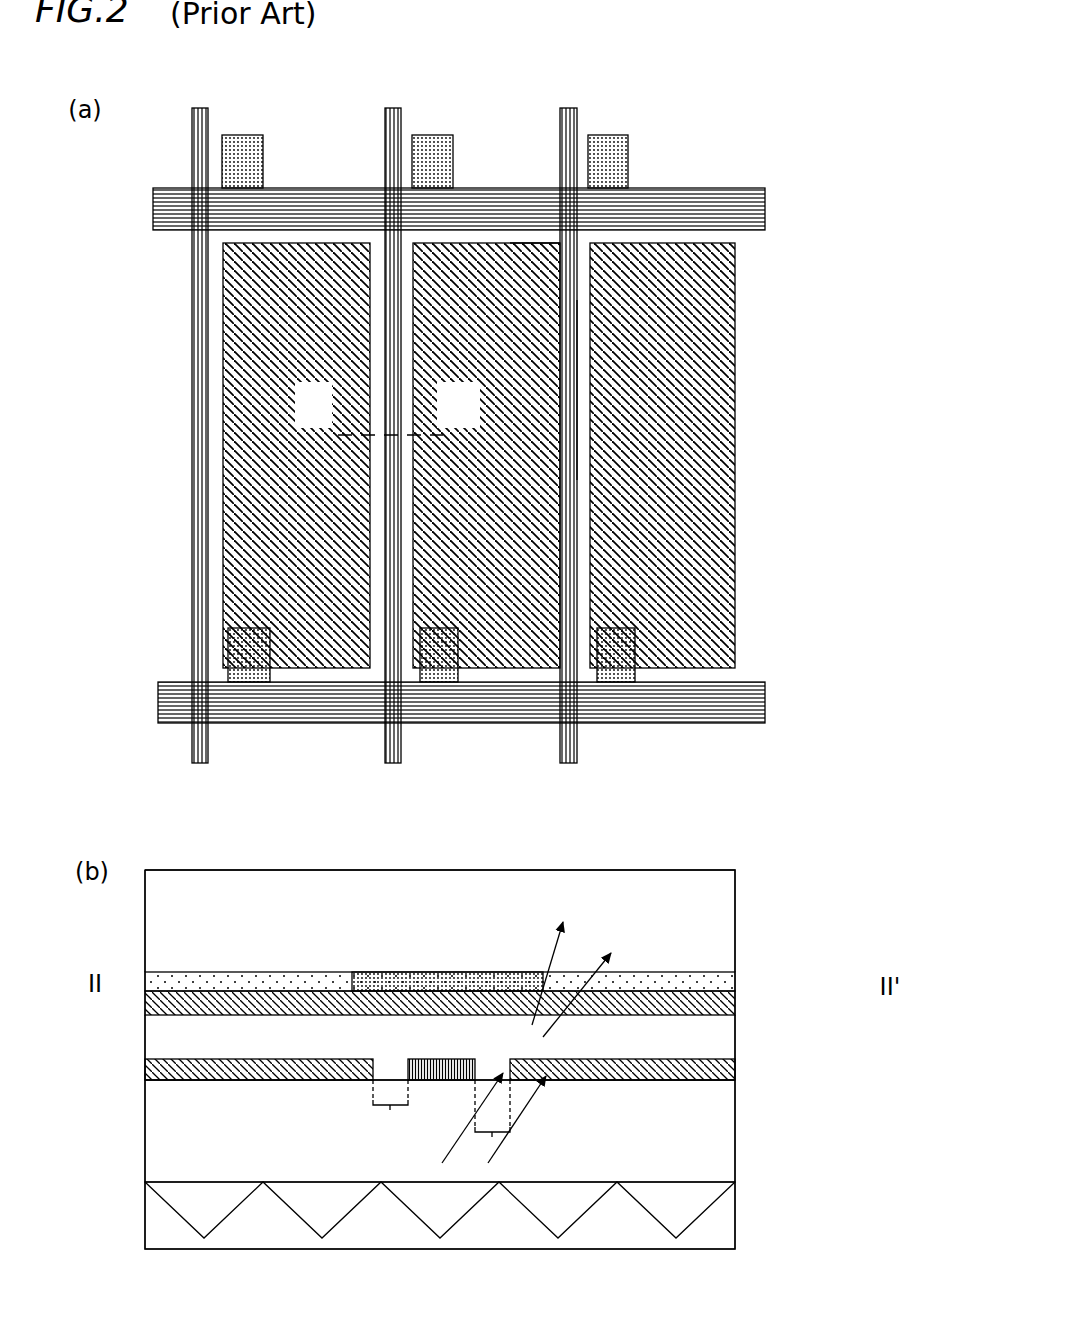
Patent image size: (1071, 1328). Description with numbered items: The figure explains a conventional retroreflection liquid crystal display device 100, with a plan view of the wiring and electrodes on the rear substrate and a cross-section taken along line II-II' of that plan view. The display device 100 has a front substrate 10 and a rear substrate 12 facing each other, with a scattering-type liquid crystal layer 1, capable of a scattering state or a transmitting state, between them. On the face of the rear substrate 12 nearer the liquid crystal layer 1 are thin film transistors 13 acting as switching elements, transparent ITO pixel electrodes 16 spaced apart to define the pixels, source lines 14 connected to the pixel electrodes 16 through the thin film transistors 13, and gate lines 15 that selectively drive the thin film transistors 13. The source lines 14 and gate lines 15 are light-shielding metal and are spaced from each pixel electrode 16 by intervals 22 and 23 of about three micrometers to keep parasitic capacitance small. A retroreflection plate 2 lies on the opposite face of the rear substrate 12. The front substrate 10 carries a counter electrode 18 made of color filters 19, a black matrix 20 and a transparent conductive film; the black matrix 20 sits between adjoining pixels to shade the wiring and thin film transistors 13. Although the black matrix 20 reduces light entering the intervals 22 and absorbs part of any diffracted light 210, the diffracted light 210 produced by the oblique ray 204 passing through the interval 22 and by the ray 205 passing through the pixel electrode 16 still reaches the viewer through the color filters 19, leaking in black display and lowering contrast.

The display device 100 is at (700, 88).
The rear substrate 12 is at (678, 144).
The thin film transistor 13 is at (246, 135).
The source line 14 is at (391, 108).
The gate line 15 is at (727, 188).
The pixel electrode 16 is at (698, 308).
The interval 22 is at (587, 387).
The interval 23 is at (510, 240).
The front substrate 10 is at (713, 908).
The color filter 19 is at (725, 983).
The black matrix 20 is at (440, 972).
The counter electrode 18 is at (725, 1007).
The liquid crystal layer 1 is at (718, 1040).
The retroreflection plate 2 is at (725, 1217).
The ray 204 is at (468, 1128).
The ray 205 is at (522, 1117).
The diffracted light 210 is at (548, 947).